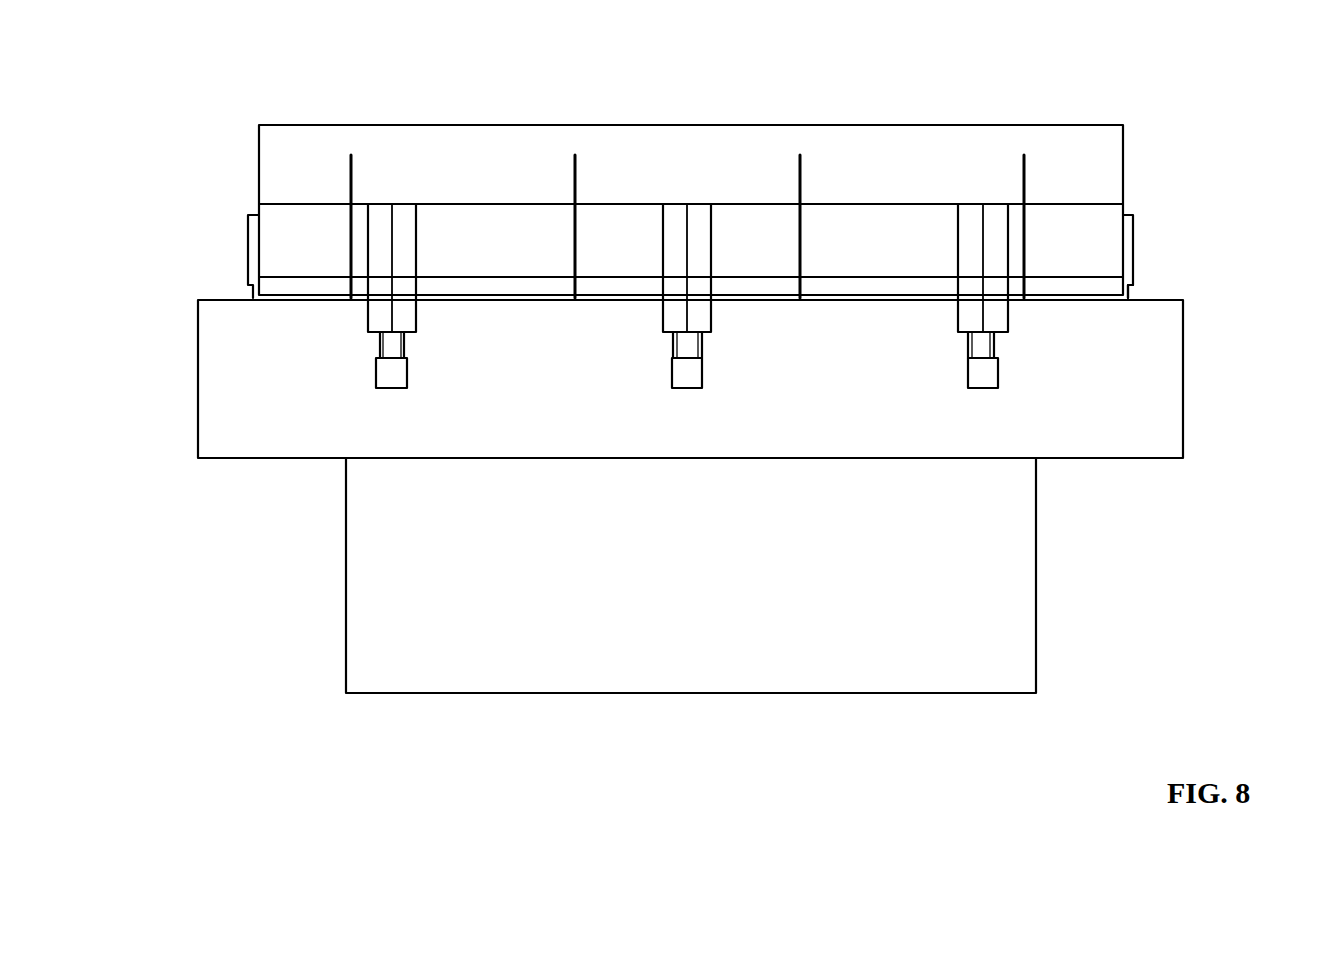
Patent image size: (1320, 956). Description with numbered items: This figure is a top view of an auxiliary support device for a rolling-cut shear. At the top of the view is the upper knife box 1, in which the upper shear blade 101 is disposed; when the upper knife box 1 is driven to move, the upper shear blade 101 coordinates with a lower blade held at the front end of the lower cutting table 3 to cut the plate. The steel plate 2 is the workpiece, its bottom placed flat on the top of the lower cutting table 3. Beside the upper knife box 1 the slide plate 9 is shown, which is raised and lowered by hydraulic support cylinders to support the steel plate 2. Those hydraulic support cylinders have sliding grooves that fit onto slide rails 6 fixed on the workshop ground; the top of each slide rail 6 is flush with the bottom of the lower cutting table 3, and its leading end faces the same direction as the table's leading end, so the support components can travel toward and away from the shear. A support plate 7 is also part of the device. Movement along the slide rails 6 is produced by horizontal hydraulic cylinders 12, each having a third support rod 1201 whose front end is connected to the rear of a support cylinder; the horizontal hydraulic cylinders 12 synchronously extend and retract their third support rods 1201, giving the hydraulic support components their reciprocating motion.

The upper knife box 1 is at (1131, 248).
The upper shear blade 101 is at (1128, 293).
The steel plate 2 is at (386, 612).
The lower cutting table 3 is at (263, 393).
The slide rail 6 is at (385, 254).
The support plate 7 is at (1027, 166).
The slide plate 9 is at (1088, 183).
The horizontal hydraulic cylinder 12 is at (978, 367).
The third support rod 1201 is at (985, 340).